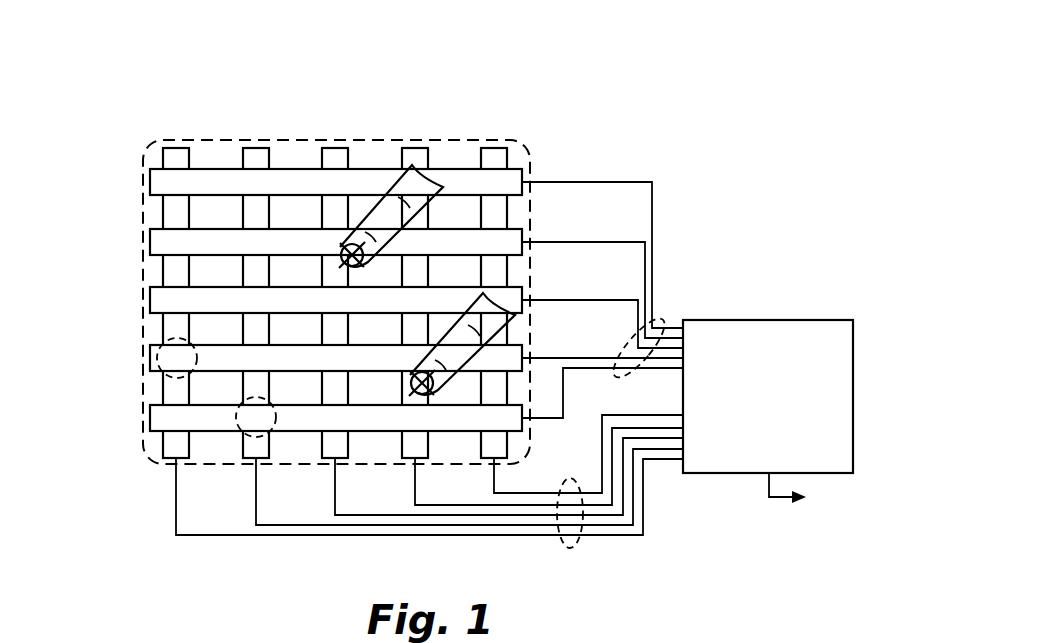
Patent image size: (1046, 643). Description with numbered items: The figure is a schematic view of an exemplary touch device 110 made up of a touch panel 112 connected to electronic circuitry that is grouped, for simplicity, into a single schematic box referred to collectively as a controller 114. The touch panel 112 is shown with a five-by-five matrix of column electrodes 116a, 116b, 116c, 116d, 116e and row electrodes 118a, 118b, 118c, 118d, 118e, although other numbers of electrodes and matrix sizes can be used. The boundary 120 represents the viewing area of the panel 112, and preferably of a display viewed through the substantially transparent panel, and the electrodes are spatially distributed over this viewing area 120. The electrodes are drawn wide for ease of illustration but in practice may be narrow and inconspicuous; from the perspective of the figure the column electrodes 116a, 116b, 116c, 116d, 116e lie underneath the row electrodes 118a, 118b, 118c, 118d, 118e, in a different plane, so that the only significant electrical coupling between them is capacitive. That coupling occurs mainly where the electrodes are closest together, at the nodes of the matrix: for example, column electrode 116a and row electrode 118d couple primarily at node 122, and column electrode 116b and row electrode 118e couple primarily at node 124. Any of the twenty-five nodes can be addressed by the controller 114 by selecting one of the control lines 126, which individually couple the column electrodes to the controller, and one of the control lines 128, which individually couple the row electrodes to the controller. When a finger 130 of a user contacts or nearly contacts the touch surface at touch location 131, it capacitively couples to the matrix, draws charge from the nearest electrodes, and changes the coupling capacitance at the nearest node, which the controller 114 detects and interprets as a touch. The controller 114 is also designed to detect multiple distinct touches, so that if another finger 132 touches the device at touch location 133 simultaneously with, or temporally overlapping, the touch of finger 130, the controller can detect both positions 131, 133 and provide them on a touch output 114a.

The touch device 110 is at (688, 80).
The touch panel 112 is at (138, 128).
The controller 114 is at (768, 396).
The touch output 114a is at (777, 498).
The column electrode 116a is at (176, 150).
The column electrode 116b is at (256, 150).
The column electrode 116c is at (334, 150).
The column electrode 116d is at (413, 150).
The column electrode 116e is at (495, 150).
The row electrode 118a is at (155, 180).
The row electrode 118b is at (155, 240).
The row electrode 118c is at (155, 298).
The row electrode 118d is at (155, 357).
The row electrode 118e is at (155, 416).
The boundary 120 is at (528, 152).
The node 122 is at (175, 342).
The node 124 is at (257, 435).
The control lines 126 is at (572, 550).
The control lines 128 is at (655, 320).
The finger 130 is at (403, 165).
The touch location 131 is at (341, 247).
The finger 132 is at (500, 303).
The touch location 133 is at (416, 392).